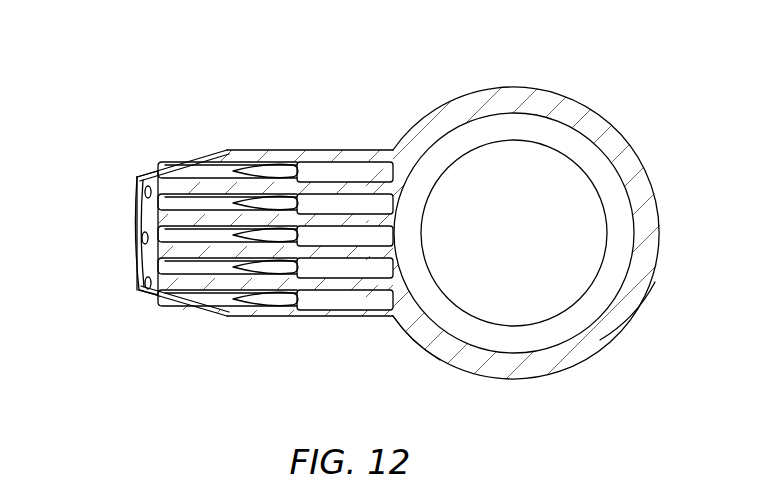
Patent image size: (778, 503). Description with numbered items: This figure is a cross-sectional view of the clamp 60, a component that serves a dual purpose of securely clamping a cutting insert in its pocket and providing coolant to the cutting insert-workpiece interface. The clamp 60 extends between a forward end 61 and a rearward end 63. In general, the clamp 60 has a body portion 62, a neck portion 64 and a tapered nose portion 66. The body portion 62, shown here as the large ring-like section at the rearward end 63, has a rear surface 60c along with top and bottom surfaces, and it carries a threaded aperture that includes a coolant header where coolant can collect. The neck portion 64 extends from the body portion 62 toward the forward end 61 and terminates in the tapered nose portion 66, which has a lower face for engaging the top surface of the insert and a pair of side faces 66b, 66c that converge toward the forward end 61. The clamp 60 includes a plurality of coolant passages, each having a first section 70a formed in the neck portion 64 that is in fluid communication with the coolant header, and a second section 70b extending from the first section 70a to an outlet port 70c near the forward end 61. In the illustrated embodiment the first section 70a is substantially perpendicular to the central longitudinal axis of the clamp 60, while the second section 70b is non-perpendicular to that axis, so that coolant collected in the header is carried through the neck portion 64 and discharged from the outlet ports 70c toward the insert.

The clamp 60 is at (618, 80).
The rear surface 60c is at (655, 282).
The forward end 61 is at (115, 305).
The body portion 62 is at (417, 363).
The rearward end 63 is at (595, 367).
The neck portion 64 is at (257, 80).
The tapered nose portion 66 is at (197, 153).
The side face 66b is at (165, 170).
The side face 66c is at (202, 310).
The first section 70a is at (363, 237).
The second section 70b is at (202, 238).
The outlet port 70c is at (143, 238).